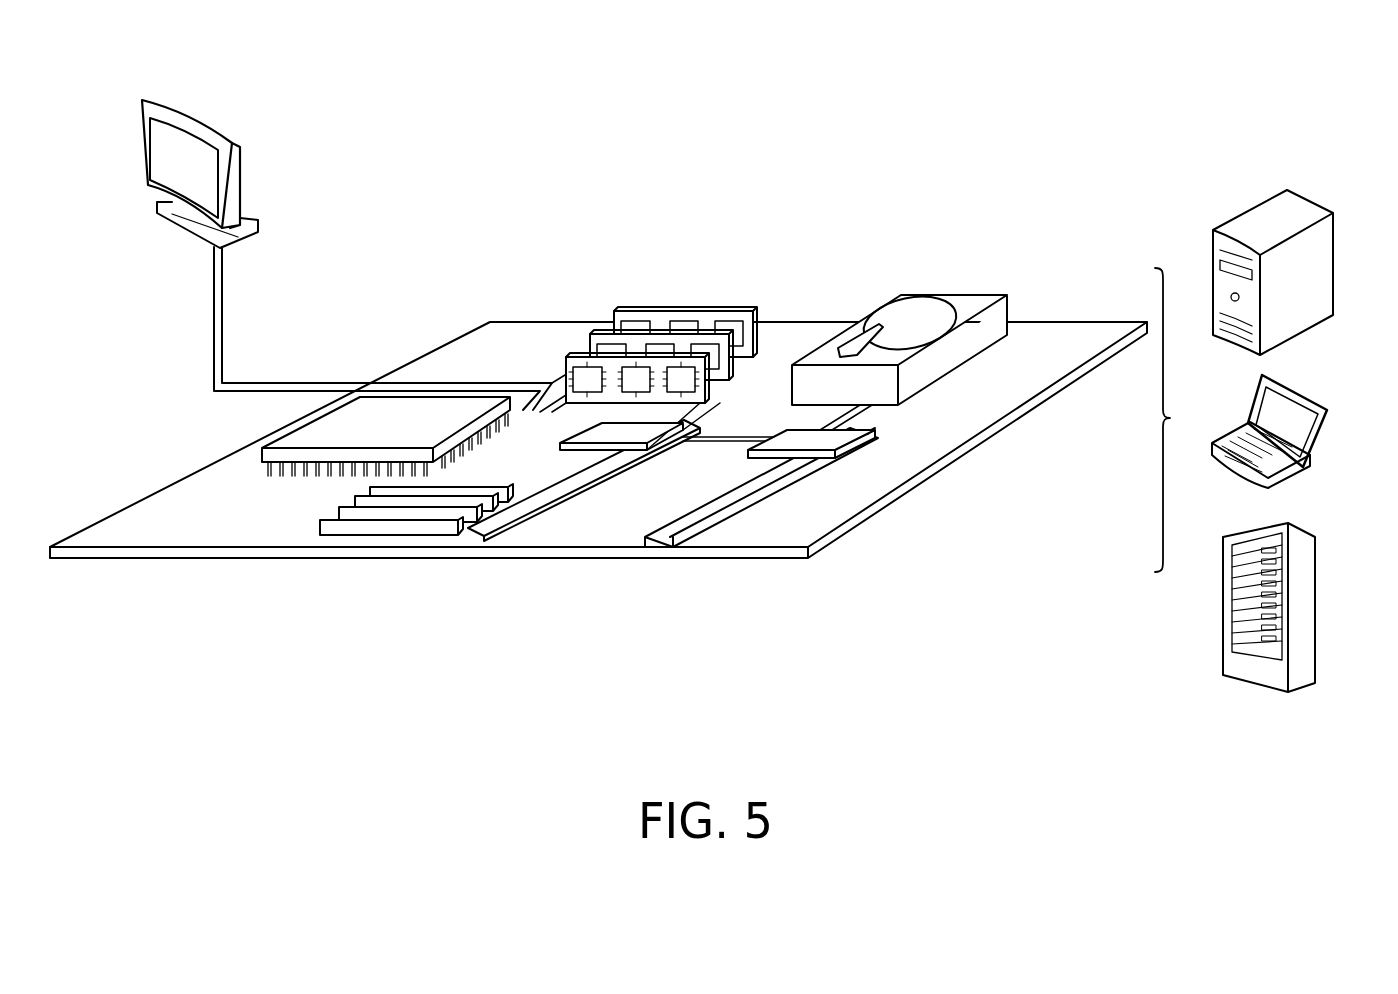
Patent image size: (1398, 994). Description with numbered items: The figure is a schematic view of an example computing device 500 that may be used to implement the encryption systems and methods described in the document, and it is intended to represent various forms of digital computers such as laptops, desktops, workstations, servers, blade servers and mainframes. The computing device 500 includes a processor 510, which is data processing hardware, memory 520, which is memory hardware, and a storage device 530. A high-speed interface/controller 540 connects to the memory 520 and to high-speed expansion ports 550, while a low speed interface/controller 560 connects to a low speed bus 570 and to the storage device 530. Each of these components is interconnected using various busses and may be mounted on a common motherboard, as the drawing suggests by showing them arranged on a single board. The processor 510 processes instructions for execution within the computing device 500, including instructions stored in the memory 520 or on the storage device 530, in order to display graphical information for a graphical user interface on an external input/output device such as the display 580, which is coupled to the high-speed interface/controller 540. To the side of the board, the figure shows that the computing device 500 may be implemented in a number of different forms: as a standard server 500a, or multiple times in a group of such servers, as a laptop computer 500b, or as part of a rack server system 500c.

The computing device 500 is at (963, 70).
The standard server 500a is at (1245, 208).
The laptop computer 500b is at (1305, 405).
The rack server system 500c is at (1310, 585).
The processor 510 is at (262, 450).
The memory 520 is at (683, 312).
The storage device 530 is at (948, 290).
The high-speed interface/controller 540 is at (628, 452).
The high-speed expansion ports 550 is at (320, 522).
The low speed interface/controller 560 is at (800, 440).
The low speed bus 570 is at (680, 552).
The display 580 is at (142, 152).